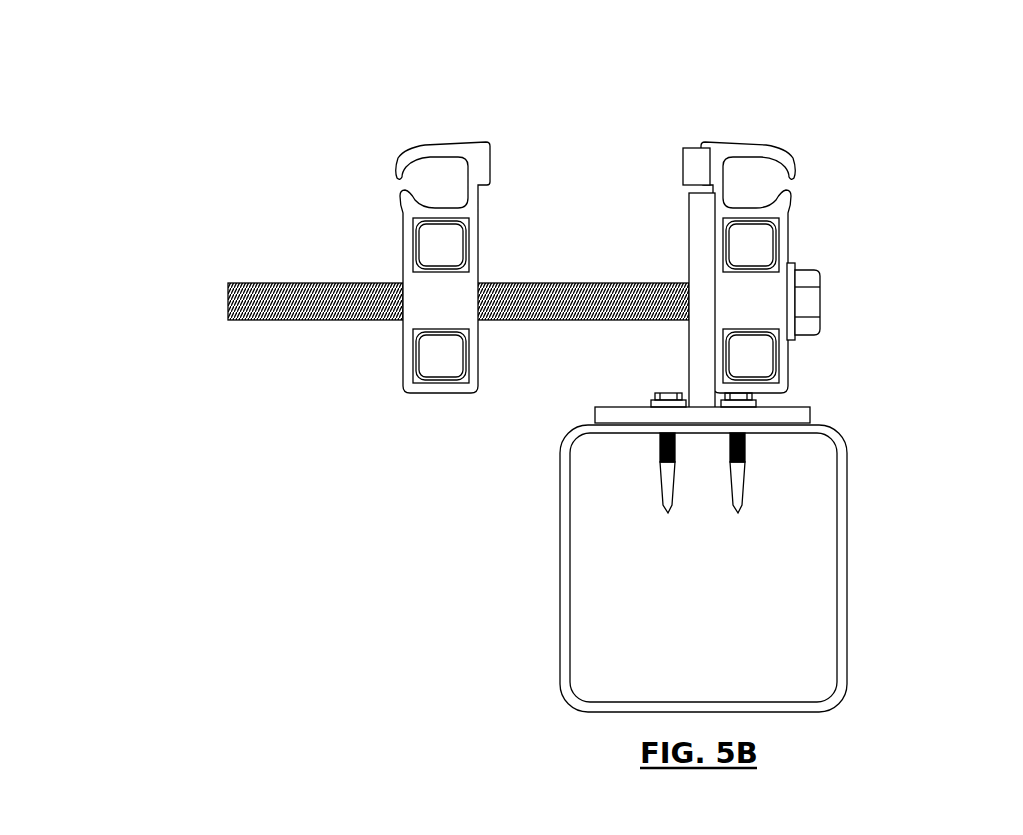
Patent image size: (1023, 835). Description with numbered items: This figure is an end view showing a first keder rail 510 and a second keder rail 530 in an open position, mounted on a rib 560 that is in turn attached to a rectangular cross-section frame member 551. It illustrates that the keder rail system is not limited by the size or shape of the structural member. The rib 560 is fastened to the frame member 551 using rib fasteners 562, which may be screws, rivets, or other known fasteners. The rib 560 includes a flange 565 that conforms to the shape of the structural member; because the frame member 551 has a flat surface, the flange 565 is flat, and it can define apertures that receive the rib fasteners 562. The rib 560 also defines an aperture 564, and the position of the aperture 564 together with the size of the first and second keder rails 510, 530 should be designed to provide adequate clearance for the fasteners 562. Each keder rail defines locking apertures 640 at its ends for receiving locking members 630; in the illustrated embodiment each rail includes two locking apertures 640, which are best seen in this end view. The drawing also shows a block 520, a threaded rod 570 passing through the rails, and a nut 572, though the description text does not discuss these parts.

The first keder rail 510 is at (800, 233).
The spacer block 520 is at (651, 105).
The second keder rail 530 is at (372, 233).
The rectangular cross-section frame member 551 is at (768, 568).
The rib 560 is at (776, 263).
The rib fasteners 562 is at (720, 453).
The aperture 564 is at (632, 300).
The flange 565 is at (798, 388).
The threaded rod 570 is at (425, 232).
The nut 572 is at (872, 293).
The locking members 630 is at (582, 296).
The locking apertures 640 is at (585, 286).